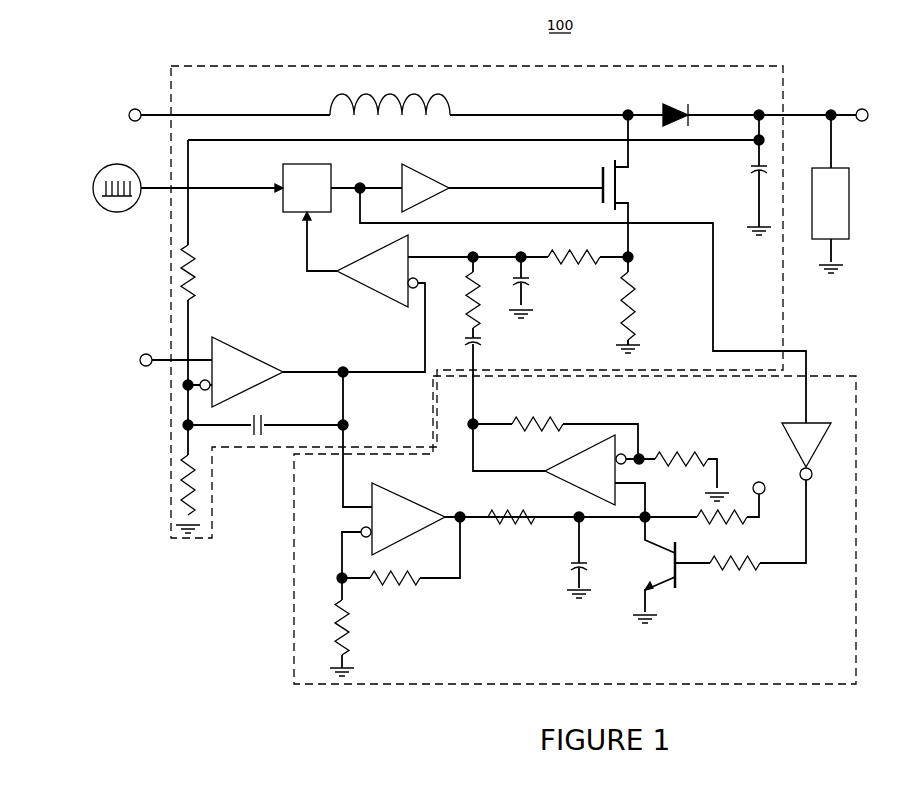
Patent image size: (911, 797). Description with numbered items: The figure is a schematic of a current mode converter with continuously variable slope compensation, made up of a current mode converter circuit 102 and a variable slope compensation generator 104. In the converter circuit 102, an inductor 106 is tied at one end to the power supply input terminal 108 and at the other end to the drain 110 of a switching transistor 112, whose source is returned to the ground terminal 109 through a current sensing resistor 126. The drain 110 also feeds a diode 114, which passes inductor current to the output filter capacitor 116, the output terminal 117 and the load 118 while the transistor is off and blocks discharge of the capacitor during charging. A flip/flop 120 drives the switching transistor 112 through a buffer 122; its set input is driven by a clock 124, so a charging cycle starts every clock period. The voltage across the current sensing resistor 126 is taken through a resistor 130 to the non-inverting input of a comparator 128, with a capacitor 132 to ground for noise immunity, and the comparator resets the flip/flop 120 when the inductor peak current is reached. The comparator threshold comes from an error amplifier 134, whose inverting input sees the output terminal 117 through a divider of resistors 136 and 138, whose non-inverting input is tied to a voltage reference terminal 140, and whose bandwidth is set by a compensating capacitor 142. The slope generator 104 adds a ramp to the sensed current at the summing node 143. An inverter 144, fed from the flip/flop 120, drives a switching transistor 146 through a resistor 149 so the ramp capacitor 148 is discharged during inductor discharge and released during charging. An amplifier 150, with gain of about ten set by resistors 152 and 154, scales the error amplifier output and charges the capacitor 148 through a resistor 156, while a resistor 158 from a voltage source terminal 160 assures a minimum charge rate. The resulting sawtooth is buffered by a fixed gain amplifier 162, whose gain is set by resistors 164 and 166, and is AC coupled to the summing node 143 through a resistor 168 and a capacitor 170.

The current mode converter circuit 102 is at (783, 345).
The variable slope compensation generator 104 is at (856, 498).
The inductor 106 is at (452, 105).
The power supply input terminal 108 is at (128, 118).
The ground terminal 109 is at (630, 345).
The drain 110 is at (618, 169).
The switching transistor 112 is at (603, 180).
The diode 114 is at (688, 108).
The output filter capacitor 116 is at (752, 172).
The output terminal 117 is at (868, 120).
The load 118 is at (849, 205).
The flip/flop 120 is at (331, 166).
The buffer 122 is at (437, 180).
The clock 124 is at (100, 205).
The current sensing resistor 126 is at (636, 298).
The comparator 128 is at (378, 290).
The resistor 130 is at (548, 250).
The capacitor 132 is at (525, 285).
The error amplifier 134 is at (232, 346).
The resistor 136 is at (195, 292).
The resistor 138 is at (181, 485).
The voltage reference terminal 140 is at (141, 365).
The compensating capacitor 142 is at (262, 430).
The summing node 143 is at (473, 257).
The inverter 144 is at (785, 423).
The switching transistor 146 is at (676, 585).
The capacitor 148 is at (578, 568).
The resistor 149 is at (752, 573).
The amplifier 150 is at (340, 575).
The resistor 152 is at (410, 588).
The resistor 154 is at (350, 630).
The resistor 156 is at (488, 511).
The resistor 158 is at (740, 528).
The voltage source terminal 160 is at (759, 482).
The amplifier 162 is at (473, 428).
The resistor 164 is at (560, 416).
The resistor 166 is at (680, 450).
The resistor 168 is at (480, 305).
The capacitor 170 is at (478, 342).